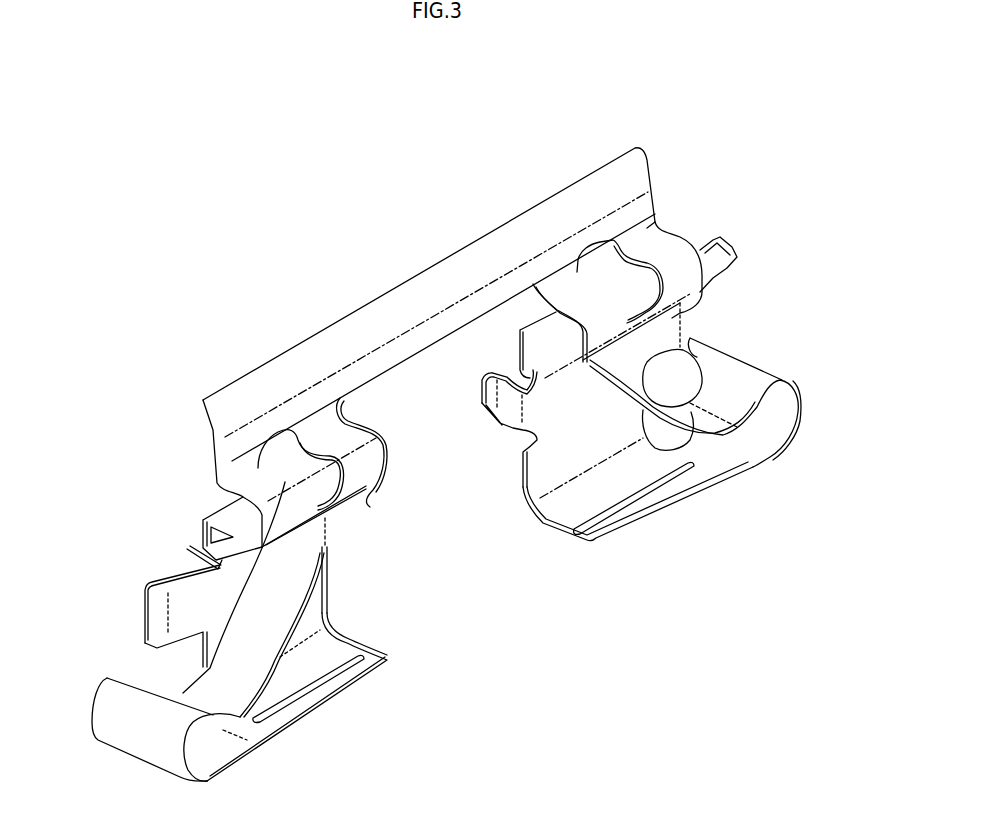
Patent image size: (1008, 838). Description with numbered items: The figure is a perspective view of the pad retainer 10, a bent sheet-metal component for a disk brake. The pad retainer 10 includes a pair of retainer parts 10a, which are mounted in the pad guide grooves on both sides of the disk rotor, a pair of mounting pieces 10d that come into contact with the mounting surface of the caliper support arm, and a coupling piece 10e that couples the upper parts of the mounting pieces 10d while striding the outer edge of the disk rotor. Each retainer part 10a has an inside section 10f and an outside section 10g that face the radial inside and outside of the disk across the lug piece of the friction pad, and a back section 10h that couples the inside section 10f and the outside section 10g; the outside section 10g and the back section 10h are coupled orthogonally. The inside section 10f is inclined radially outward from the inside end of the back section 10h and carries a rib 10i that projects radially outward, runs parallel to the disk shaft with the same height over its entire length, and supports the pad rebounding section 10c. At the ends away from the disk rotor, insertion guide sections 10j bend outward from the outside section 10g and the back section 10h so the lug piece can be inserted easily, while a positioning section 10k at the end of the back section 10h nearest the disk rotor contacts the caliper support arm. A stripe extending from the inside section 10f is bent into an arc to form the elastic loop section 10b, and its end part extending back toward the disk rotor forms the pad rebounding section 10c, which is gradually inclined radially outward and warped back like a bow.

The pad retainer 10 is at (443, 171).
The retainer part 10a is at (333, 585).
The elastic loop section 10b is at (150, 752).
The pad rebounding section 10c is at (308, 563).
The mounting piece 10d is at (220, 495).
The coupling piece 10e is at (425, 292).
The inside section 10f is at (317, 697).
The outside section 10g is at (363, 500).
The back section 10h is at (318, 612).
The rib 10i is at (377, 645).
The insertion guide section 10j is at (183, 553).
The positioning section 10k is at (483, 397).